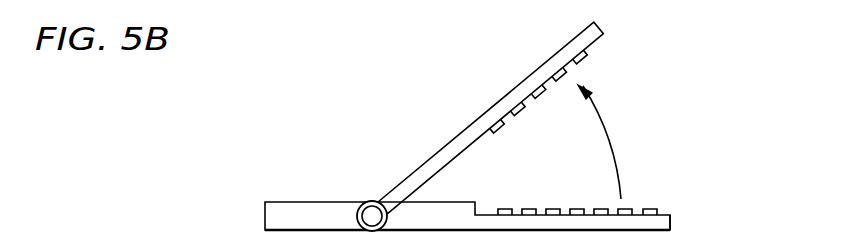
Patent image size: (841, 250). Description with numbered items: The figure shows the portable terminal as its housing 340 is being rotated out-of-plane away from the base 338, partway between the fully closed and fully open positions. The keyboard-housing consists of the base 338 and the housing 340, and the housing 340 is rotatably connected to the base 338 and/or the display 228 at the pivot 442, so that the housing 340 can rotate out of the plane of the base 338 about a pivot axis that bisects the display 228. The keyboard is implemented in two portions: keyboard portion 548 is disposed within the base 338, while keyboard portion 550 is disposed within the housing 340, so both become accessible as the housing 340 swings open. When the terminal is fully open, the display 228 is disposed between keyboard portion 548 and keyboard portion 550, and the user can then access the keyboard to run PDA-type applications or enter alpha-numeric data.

The display 228 is at (303, 212).
The pivot 442 is at (375, 198).
The housing 340 is at (553, 57).
The keyboard portion 550 is at (533, 110).
The keyboard portion 548 is at (545, 204).
The base 338 is at (662, 218).